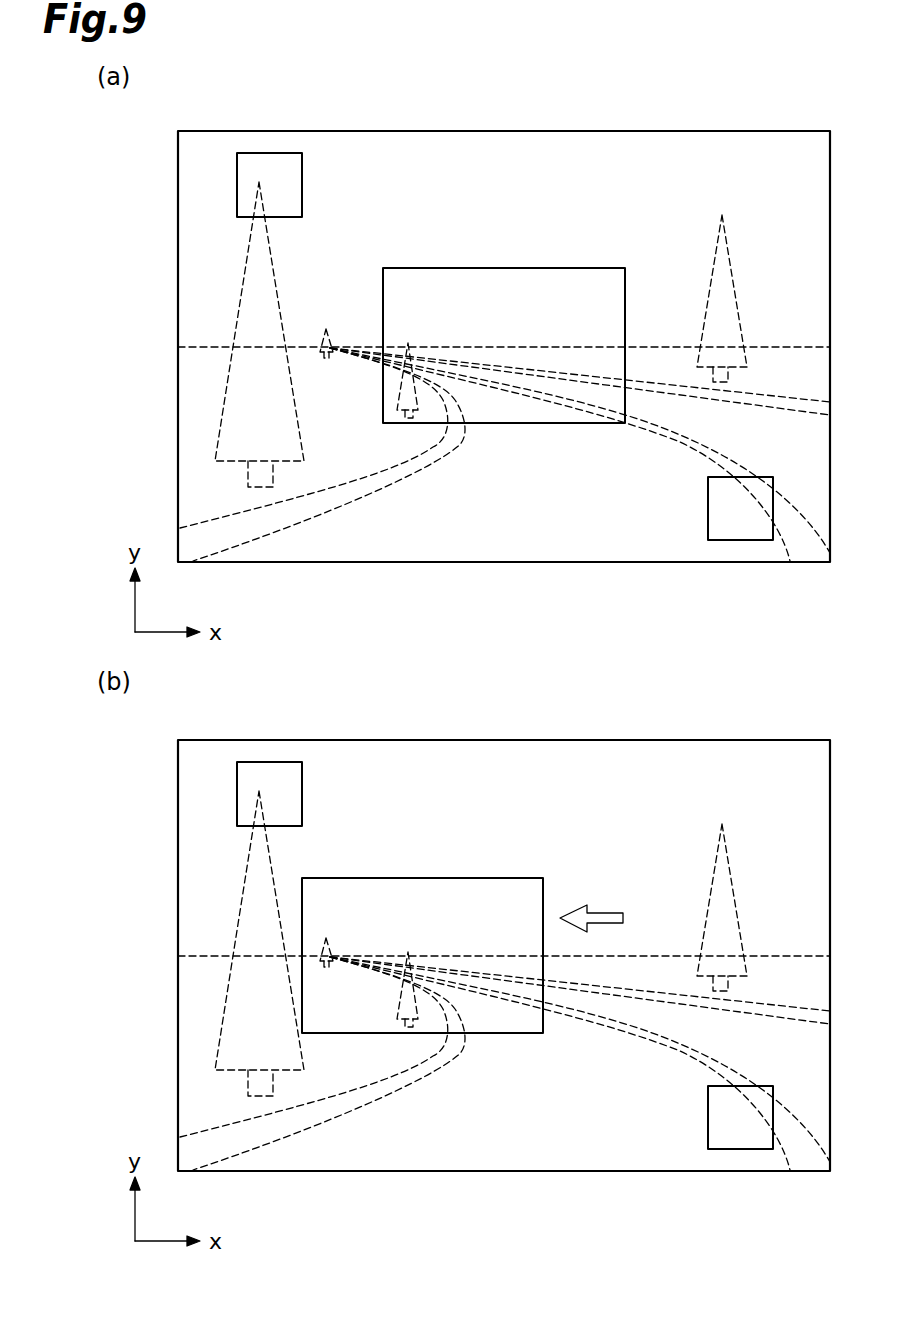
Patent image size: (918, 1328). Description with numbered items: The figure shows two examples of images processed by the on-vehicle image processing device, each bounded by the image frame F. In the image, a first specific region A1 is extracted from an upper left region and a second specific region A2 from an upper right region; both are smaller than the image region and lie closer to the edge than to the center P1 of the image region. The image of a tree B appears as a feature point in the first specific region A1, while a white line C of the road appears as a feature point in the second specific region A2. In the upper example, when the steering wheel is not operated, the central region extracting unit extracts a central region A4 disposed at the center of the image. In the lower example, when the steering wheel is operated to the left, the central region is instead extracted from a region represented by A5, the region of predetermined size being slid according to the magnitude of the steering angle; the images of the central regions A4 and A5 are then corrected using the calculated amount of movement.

The image frame F is at (538, 130).
The first specific region A1 is at (302, 184).
The second specific region A2 is at (707, 514).
The central region A4 is at (589, 267).
The region for central region extraction A5 is at (505, 877).
The center of image region P1 is at (500, 346).
The tree B is at (251, 639).
The white line C is at (751, 452).